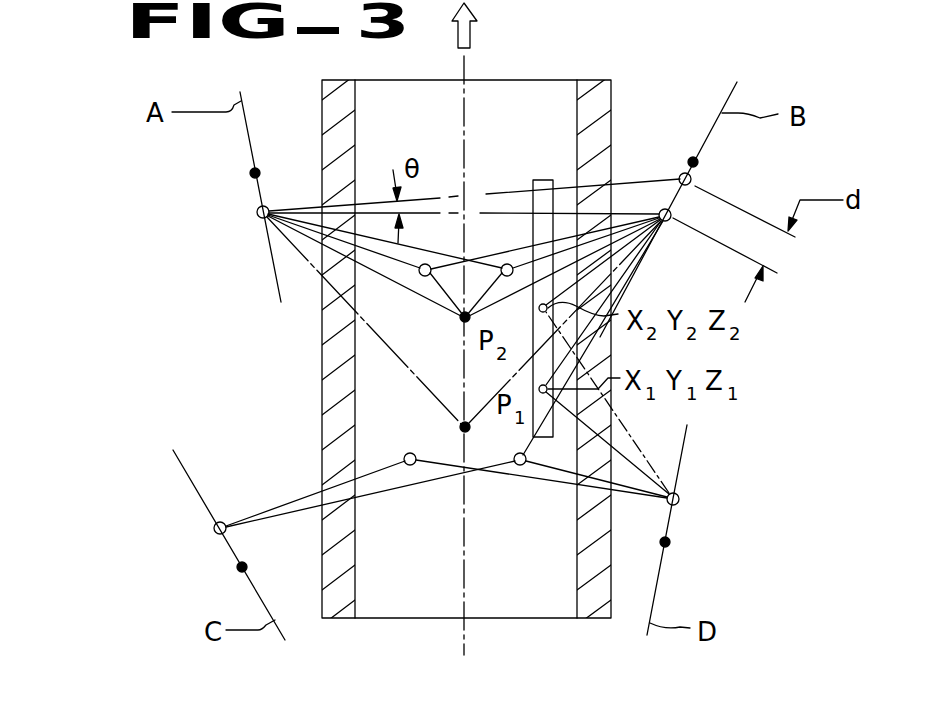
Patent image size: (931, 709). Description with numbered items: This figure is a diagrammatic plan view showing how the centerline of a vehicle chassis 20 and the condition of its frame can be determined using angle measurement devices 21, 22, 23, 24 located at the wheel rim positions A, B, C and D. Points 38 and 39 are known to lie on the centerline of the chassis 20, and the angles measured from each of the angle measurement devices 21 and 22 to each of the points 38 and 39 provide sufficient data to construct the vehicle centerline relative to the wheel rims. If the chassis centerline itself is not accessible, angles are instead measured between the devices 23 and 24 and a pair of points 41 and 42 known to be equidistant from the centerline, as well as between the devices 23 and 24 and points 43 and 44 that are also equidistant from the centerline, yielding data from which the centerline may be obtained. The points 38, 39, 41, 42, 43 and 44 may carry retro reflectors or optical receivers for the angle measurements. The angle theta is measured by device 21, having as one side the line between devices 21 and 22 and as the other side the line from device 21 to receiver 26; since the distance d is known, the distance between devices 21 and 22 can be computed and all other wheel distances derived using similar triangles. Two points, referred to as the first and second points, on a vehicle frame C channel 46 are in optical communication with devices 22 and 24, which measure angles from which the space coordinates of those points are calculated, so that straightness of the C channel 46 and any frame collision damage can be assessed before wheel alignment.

The chassis 20 is at (594, 82).
The angle measurement device 21 is at (257, 212).
The angle measurement device 22 is at (672, 215).
The angle measurement device 23 is at (214, 528).
The angle measurement device 24 is at (680, 498).
The receiver 26 is at (691, 178).
The point 38 is at (460, 317).
The point 39 is at (460, 427).
The point 41 is at (413, 464).
The point 42 is at (523, 464).
The point 43 is at (419, 270).
The point 44 is at (519, 242).
The vehicle frame C channel 46 is at (533, 197).